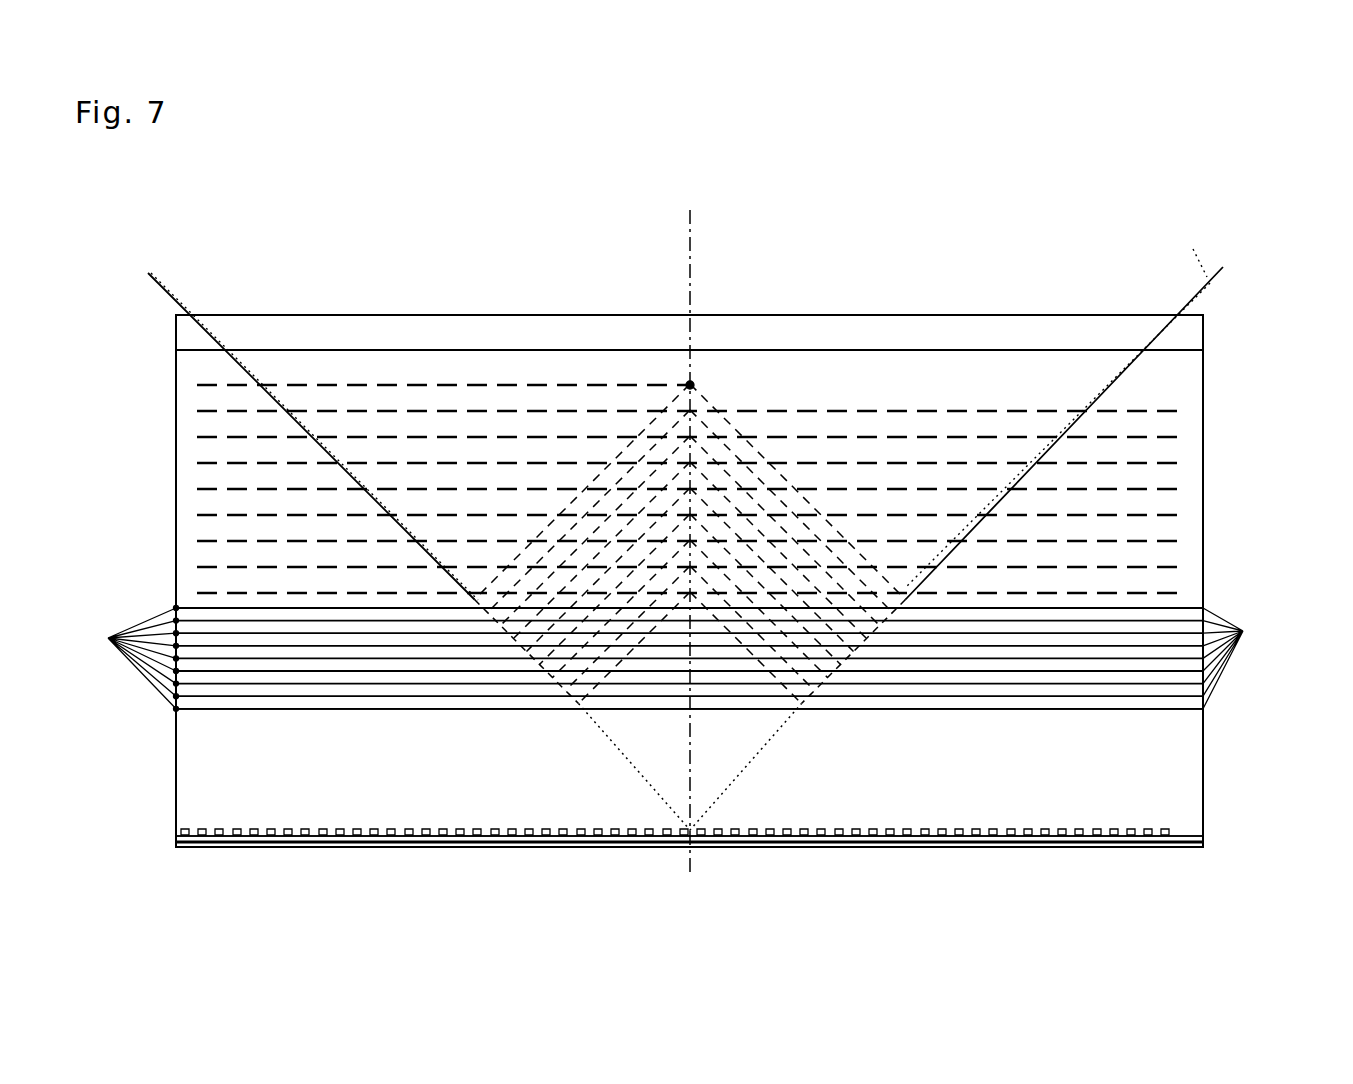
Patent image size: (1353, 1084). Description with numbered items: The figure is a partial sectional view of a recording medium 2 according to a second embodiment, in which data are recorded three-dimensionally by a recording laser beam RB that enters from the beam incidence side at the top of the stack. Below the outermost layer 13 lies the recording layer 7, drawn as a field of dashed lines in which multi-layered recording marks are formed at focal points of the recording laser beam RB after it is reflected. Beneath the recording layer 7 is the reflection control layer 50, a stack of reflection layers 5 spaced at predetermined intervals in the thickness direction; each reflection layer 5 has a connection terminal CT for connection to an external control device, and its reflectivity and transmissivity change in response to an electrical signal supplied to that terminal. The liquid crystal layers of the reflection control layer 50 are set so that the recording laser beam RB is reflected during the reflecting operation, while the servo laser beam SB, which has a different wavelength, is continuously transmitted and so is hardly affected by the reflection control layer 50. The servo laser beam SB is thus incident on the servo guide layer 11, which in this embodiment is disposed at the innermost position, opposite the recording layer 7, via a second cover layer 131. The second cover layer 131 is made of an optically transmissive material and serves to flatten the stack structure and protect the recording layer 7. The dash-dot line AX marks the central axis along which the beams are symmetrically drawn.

The recording medium 2 is at (348, 243).
The upper layer / protective plate 13 is at (1190, 320).
The recording layer 7 is at (1190, 417).
The reflection layer 5 is at (722, 658).
The reflection control layer 50 is at (1274, 602).
The second cover layer 131 is at (1190, 762).
The servo guide layer 11 is at (1165, 828).
The optical axis AX is at (679, 525).
The recording laser beam RB is at (1200, 286).
The servo laser beam SB is at (770, 887).
The connection terminal CT is at (126, 659).